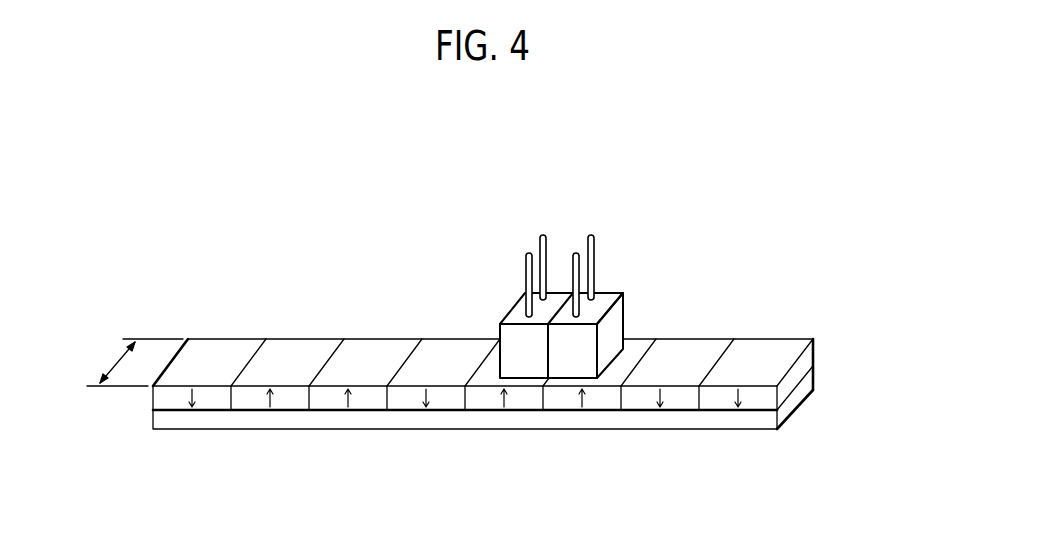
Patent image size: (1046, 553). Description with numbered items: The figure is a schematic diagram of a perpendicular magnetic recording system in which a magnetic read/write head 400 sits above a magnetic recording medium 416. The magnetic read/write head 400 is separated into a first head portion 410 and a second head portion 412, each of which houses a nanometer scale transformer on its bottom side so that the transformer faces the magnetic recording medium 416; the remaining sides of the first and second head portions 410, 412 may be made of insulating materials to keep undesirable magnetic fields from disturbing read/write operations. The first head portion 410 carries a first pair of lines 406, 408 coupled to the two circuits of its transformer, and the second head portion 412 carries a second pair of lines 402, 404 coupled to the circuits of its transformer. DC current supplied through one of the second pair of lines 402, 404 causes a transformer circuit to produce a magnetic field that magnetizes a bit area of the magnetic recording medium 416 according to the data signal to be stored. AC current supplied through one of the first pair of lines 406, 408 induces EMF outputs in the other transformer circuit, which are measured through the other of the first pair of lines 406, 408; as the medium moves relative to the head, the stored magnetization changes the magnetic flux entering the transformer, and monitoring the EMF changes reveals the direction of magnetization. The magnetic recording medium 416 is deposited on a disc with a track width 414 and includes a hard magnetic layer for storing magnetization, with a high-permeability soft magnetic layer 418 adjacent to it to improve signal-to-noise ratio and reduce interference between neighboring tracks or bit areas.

The magnetic read/write head 400 is at (502, 326).
The second pair of lines (first line) 402 is at (526, 270).
The second pair of lines (second line) 404 is at (540, 247).
The first pair of lines (first line) 406 is at (573, 257).
The first pair of lines (second line) 408 is at (594, 248).
The first head portion 410 is at (624, 318).
The second head portion 412 is at (500, 350).
The track width 414 is at (125, 362).
The magnetic recording medium 416 is at (813, 352).
The soft magnetic layer 418 is at (800, 395).